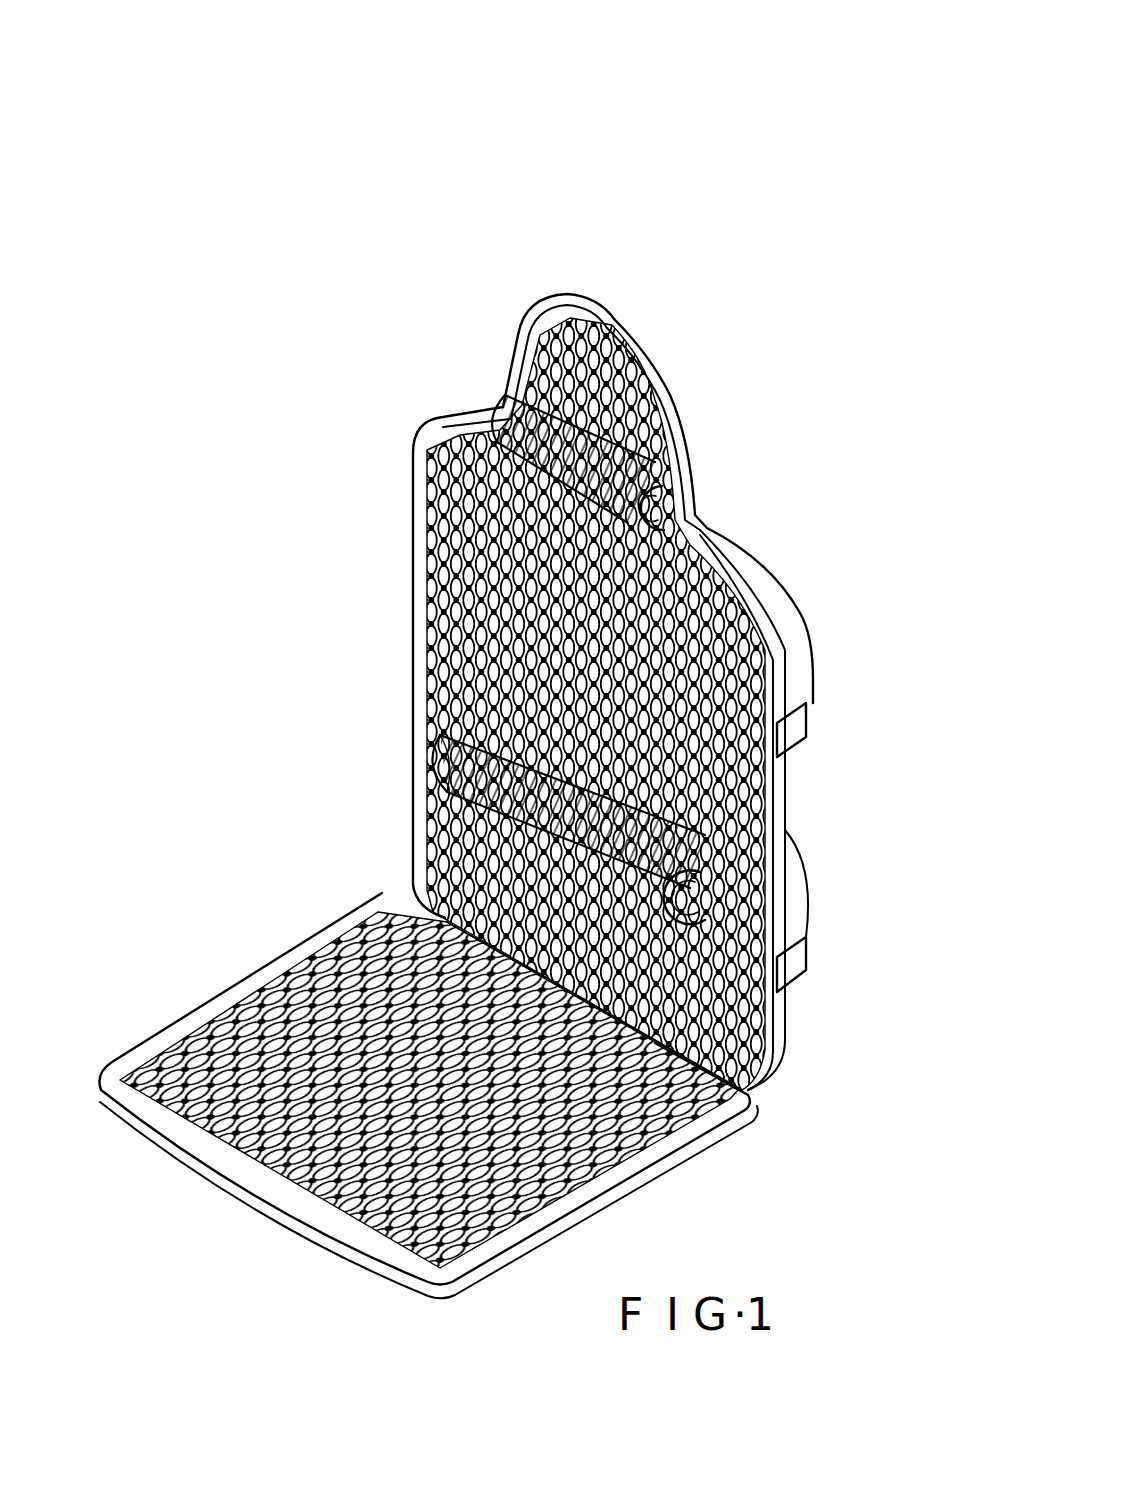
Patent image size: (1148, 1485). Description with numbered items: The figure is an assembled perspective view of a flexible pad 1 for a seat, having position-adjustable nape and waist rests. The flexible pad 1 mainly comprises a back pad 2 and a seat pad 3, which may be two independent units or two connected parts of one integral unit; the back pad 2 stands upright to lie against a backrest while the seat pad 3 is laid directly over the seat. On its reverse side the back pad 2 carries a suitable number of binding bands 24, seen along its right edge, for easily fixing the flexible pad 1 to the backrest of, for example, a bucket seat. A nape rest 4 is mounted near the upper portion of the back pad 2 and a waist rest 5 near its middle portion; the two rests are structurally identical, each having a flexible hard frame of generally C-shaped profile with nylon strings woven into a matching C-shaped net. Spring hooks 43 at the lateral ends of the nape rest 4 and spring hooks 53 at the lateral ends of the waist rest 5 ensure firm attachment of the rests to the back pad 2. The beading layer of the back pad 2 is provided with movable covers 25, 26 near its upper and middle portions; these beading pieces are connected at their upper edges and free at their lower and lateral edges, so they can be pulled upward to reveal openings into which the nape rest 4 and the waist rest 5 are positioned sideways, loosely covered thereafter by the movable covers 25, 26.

The flexible pad 1 is at (575, 133).
The back pad 2 is at (380, 843).
The seat pad 3 is at (98, 1062).
The nape rest 4 is at (668, 463).
The waist rest 5 is at (722, 826).
The binding bands 24 is at (800, 725).
The movable cover 25 is at (490, 405).
The movable cover 26 is at (430, 780).
The spring hooks 43 is at (662, 514).
The spring hooks 53 is at (716, 913).